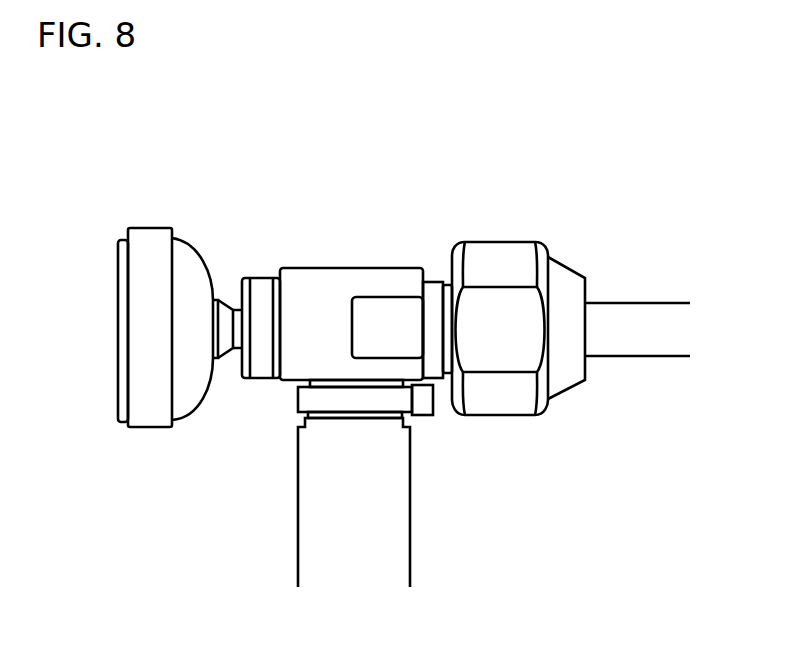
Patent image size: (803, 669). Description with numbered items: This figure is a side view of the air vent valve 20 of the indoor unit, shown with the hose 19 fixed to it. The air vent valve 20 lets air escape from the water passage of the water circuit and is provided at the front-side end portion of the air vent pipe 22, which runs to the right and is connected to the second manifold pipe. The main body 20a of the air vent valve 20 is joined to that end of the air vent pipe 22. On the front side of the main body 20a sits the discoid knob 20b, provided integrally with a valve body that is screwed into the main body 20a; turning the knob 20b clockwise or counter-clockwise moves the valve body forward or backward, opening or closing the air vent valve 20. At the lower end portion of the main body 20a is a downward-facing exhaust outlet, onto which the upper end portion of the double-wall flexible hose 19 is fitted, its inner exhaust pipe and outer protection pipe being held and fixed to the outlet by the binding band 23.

The hose 19 is at (392, 532).
The air vent valve 20 is at (337, 212).
The main body 20a is at (303, 290).
The knob 20b is at (137, 327).
The air vent pipe 22 is at (647, 318).
The binding band 23 is at (398, 398).